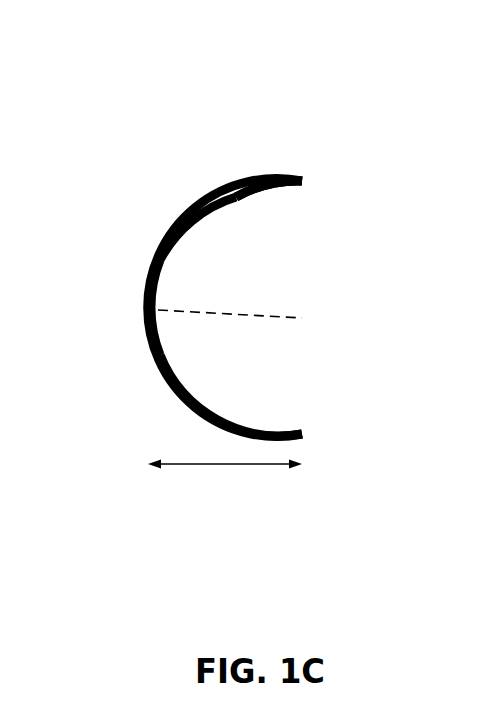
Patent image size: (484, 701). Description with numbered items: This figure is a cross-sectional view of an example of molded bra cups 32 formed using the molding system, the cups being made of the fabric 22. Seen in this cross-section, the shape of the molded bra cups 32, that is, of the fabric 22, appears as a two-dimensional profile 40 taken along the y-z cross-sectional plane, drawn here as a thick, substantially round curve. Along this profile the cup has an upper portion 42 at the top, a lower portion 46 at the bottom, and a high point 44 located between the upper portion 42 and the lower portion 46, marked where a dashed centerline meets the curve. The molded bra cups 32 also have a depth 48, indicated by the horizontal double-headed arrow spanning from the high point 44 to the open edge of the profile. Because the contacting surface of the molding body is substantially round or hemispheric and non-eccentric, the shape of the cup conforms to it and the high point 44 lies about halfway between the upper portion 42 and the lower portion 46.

The two-dimensional profile 40 is at (192, 112).
The fabric 22 is at (279, 167).
The molded bra cups 32 is at (269, 189).
The upper portion 42 is at (243, 256).
The high point 44 is at (136, 303).
The lower portion 46 is at (231, 360).
The depth 48 is at (223, 464).